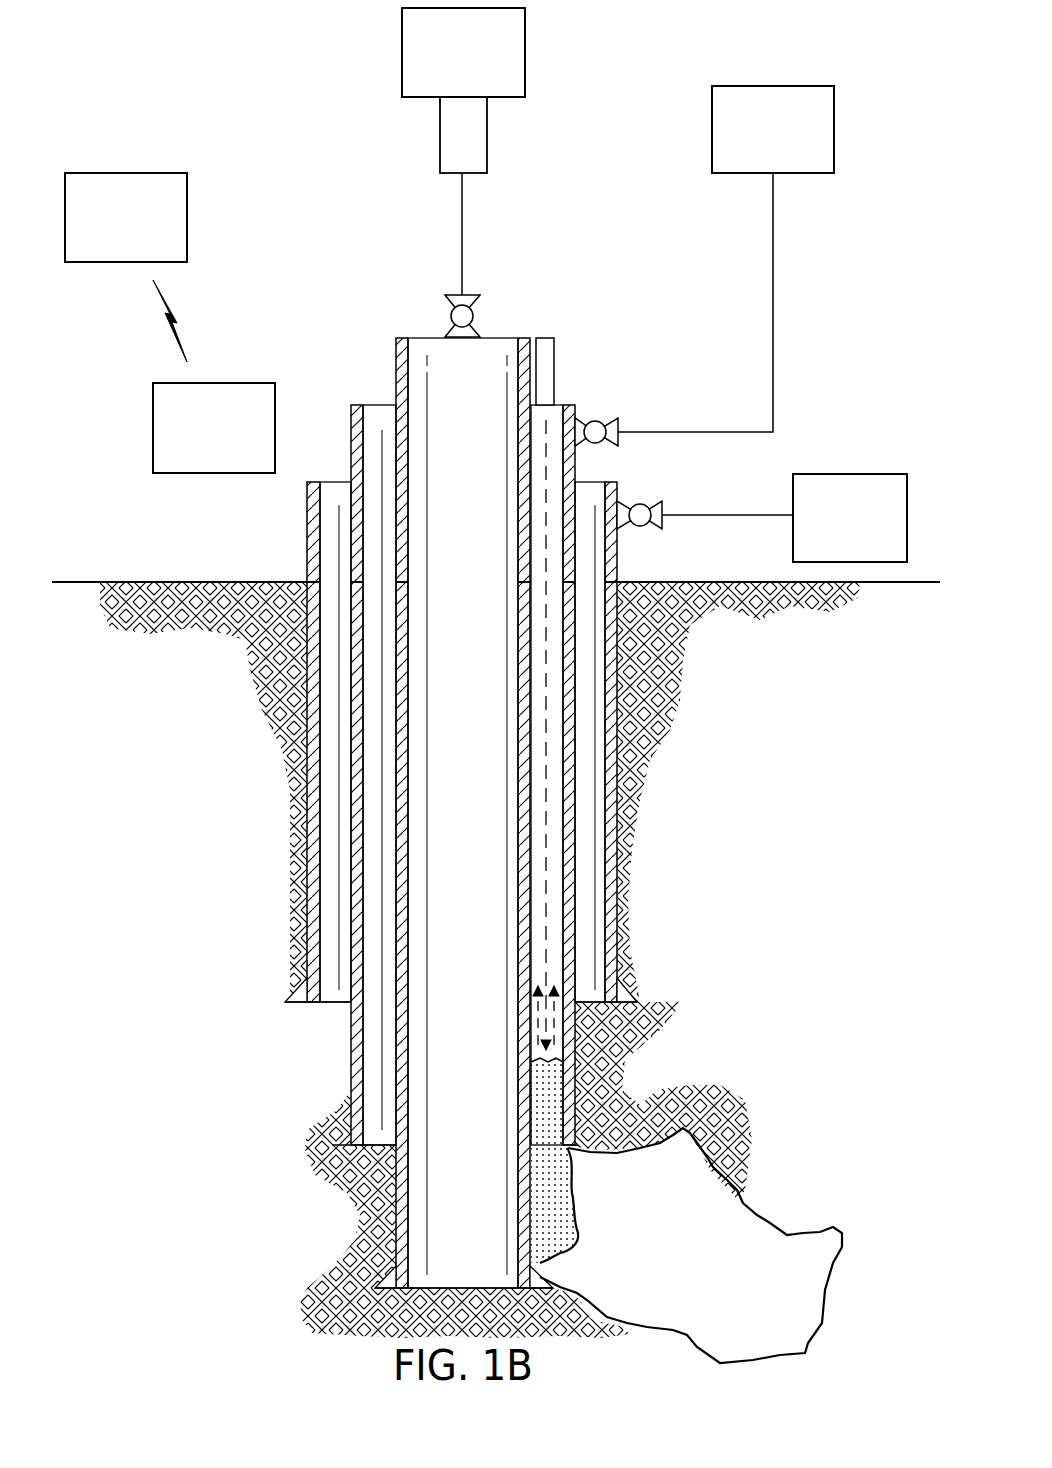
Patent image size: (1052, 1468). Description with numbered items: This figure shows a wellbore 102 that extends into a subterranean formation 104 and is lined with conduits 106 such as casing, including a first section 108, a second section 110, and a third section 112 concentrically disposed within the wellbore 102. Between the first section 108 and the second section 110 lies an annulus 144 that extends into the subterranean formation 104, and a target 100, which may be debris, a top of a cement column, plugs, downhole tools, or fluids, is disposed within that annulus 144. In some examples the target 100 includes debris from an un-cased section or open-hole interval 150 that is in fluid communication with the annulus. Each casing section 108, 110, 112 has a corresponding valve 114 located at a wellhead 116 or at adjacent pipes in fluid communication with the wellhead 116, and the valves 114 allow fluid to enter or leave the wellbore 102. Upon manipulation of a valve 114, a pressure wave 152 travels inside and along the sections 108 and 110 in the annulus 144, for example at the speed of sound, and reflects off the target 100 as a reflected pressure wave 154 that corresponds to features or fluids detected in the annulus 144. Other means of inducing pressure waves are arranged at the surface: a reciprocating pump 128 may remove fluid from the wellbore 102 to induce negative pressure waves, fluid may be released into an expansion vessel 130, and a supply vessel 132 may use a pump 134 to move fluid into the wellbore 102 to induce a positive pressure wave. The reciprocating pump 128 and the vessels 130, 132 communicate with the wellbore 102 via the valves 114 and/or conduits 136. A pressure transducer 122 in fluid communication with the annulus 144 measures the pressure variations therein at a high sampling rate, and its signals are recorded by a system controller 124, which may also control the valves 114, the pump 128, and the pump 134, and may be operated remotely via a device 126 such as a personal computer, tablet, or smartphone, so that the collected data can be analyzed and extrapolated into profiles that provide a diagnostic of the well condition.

The target 100 is at (565, 1193).
The wellbore 102 is at (426, 1030).
The subterranean formation 104 is at (780, 752).
The conduits 106 is at (568, 1046).
The first section 108 is at (403, 1215).
The second section 110 is at (358, 1018).
The third section 112 is at (612, 925).
The valve 114 is at (467, 296).
The wellhead 116 is at (566, 231).
The pressure transducer 122 is at (556, 372).
The system controller 124 is at (234, 439).
The device 126 is at (145, 229).
The reciprocating pump 128 is at (792, 145).
The expansion vessel 130 is at (870, 534).
The supply vessel 132 is at (483, 66).
The pump 134 is at (440, 134).
The conduits 136 is at (438, 206).
The annulus 144 is at (556, 872).
The open-hole interval 150 is at (728, 1213).
The pressure wave 152 is at (547, 550).
The reflected pressure wave 154 is at (537, 1003).